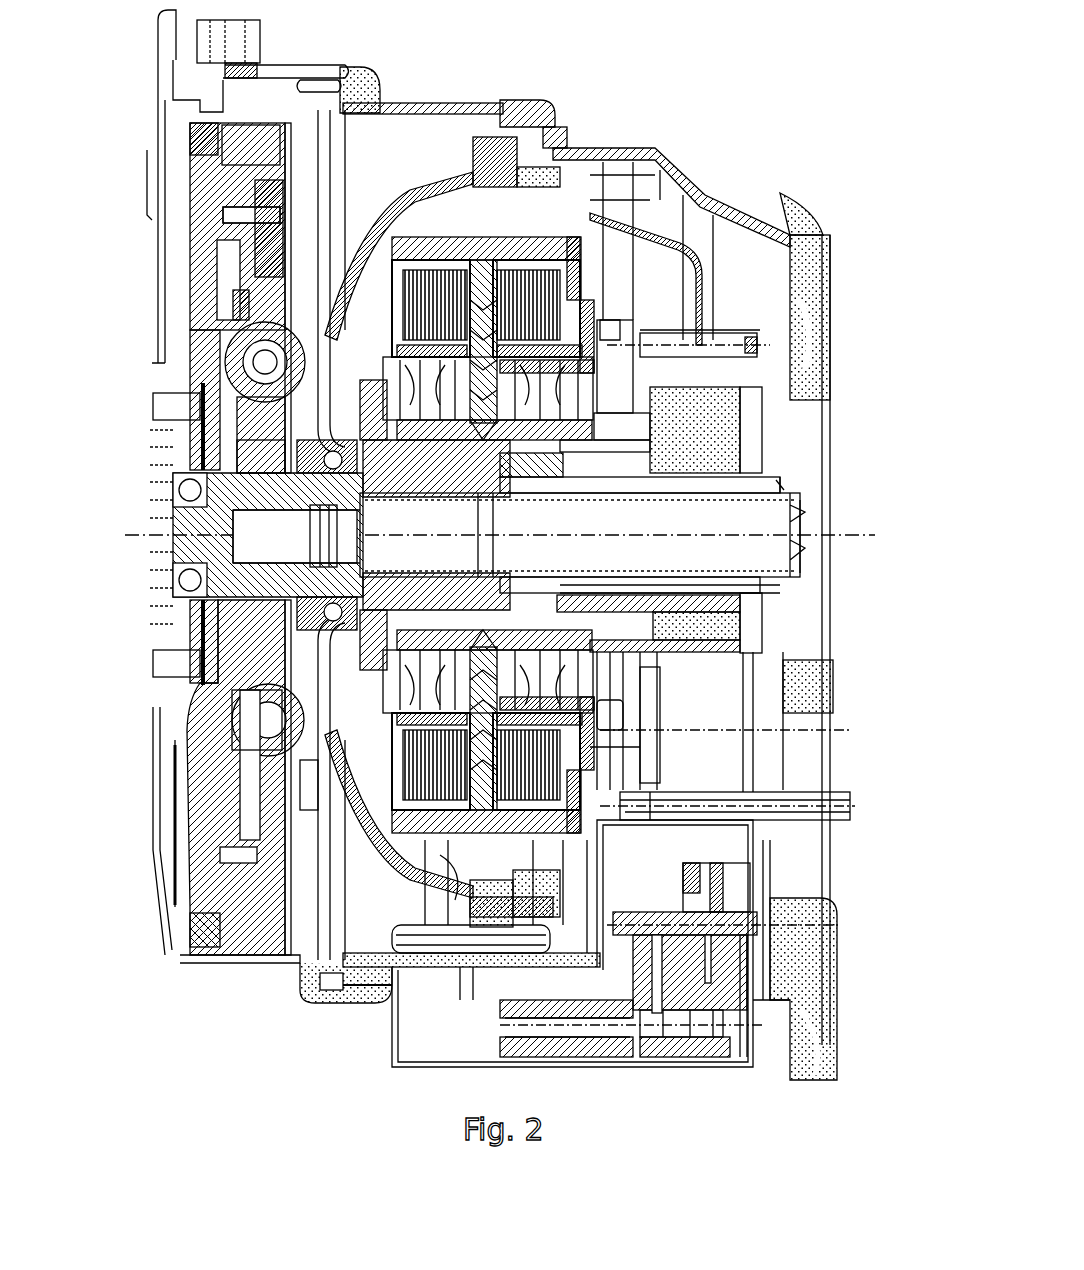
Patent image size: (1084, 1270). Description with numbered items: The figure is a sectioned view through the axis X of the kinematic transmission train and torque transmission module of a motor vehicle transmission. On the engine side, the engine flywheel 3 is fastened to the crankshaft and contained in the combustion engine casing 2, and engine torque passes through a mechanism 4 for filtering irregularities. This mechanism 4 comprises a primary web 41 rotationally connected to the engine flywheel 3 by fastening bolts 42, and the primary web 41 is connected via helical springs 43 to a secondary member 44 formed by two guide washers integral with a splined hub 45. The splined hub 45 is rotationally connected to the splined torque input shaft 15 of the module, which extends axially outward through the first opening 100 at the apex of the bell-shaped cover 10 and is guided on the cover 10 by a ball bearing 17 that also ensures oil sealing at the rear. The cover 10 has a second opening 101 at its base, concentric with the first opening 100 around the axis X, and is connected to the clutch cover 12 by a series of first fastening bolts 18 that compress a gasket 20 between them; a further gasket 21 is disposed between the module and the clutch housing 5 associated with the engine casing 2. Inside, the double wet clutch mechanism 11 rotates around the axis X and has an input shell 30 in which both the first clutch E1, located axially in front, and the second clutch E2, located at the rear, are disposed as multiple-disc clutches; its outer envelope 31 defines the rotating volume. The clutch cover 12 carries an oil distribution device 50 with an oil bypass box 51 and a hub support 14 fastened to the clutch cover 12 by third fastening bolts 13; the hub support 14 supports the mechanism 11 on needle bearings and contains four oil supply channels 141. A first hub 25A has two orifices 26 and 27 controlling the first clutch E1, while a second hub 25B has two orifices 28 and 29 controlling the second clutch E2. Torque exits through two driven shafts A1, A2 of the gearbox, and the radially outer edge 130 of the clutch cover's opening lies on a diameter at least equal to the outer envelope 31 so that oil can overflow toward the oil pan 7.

The combustion engine casing 2 is at (300, 68).
The engine flywheel 3 is at (255, 125).
The mechanism for filtering irregularities 4 is at (309, 276).
The clutch housing 5 is at (707, 197).
The oil pan 7 is at (390, 1000).
The cover 10 is at (490, 137).
The double wet clutch mechanism 11 is at (529, 211).
The clutch cover 12 is at (528, 116).
The third fastening bolts 13 is at (730, 595).
The hub support 14 is at (640, 633).
The splined torque input shaft 15 is at (227, 587).
The ball bearing 17 is at (260, 640).
The first fastening bolts 18 is at (463, 860).
The gasket 20 is at (500, 905).
The gasket 21 is at (550, 865).
The first hub 25A is at (590, 665).
The second hub 25B is at (320, 780).
The orifice 26 is at (640, 735).
The orifice 27 is at (555, 675).
The orifice 28 is at (410, 745).
The orifice 29 is at (330, 740).
The input shell 30 is at (410, 240).
The outer envelope 31 is at (392, 1000).
The primary web 41 is at (265, 267).
The fastening bolts 42 is at (285, 200).
The helical springs 43 is at (225, 365).
The secondary member 44 is at (240, 303).
The splined hub 45 is at (253, 455).
The oil distribution device 50 is at (774, 393).
The oil bypass box 51 is at (730, 380).
The first opening 100 is at (260, 710).
The second opening 101 is at (490, 190).
The radially outer edge 130 is at (560, 863).
The oil supply channels 141 is at (600, 450).
The driven shaft A1 is at (763, 492).
The driven shaft A2 is at (760, 470).
The first clutch E1 is at (543, 247).
The second clutch E2 is at (397, 145).
The axis X is at (860, 485).